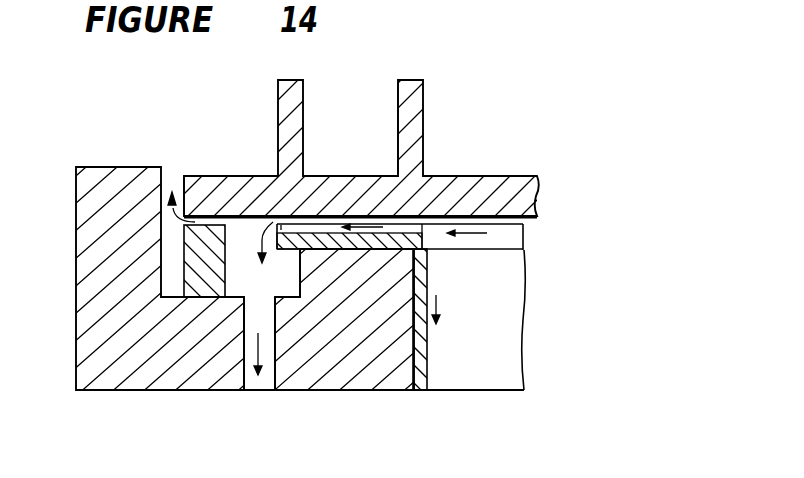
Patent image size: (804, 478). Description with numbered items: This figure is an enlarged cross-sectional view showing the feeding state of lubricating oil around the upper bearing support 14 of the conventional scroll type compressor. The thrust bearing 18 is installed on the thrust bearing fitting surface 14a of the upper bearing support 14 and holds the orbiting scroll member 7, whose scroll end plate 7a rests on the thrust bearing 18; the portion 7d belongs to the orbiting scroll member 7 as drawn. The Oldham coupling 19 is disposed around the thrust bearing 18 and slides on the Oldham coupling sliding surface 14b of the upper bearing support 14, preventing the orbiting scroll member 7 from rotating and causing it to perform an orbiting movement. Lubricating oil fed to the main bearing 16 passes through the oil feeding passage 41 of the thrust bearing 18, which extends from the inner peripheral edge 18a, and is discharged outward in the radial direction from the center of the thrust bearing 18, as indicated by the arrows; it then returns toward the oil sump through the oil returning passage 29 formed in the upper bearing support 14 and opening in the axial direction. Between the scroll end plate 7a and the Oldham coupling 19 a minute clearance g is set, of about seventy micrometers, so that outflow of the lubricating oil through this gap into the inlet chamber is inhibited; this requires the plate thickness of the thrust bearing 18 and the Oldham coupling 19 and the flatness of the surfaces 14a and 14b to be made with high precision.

The orbiting scroll member 7 is at (499, 161).
The scroll end plate 7a is at (184, 185).
The fin 7d is at (425, 103).
The minute clearance g is at (216, 218).
The oil feeding passage 41 is at (282, 217).
The upper bearing support 14 is at (75, 273).
The thrust bearing fitting surface 14a is at (333, 250).
The Oldham coupling sliding surface 14b is at (168, 300).
The main bearing 16 is at (428, 363).
The thrust bearing 18 is at (537, 242).
The inner peripheral edge 18a is at (422, 240).
The Oldham coupling 19 is at (213, 267).
The oil returning passage 29 is at (246, 350).